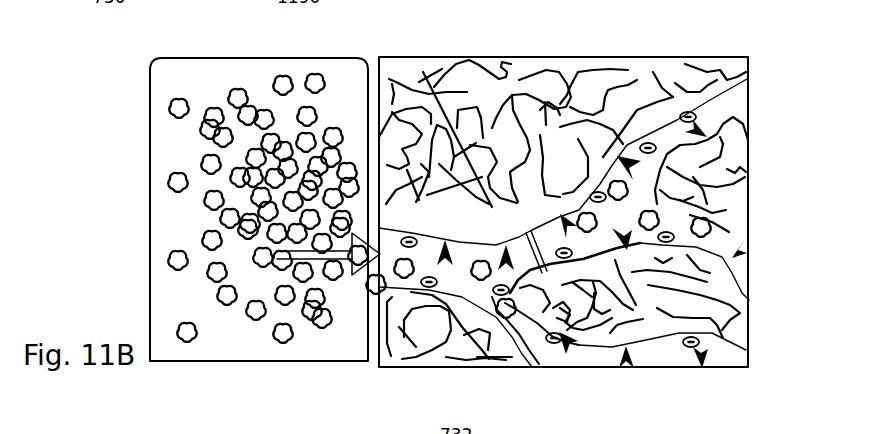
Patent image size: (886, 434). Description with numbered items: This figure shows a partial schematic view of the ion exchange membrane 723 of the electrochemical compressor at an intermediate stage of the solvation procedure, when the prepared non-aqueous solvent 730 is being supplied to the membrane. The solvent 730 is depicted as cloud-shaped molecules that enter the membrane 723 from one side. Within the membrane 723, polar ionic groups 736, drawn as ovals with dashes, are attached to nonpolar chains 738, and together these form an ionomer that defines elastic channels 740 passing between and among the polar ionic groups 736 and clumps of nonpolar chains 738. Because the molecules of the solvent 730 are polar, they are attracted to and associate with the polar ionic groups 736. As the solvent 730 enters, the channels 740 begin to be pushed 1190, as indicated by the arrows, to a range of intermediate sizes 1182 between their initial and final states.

The nonpolar chains 738 is at (469, 57).
The ion exchange membrane 723 is at (577, 57).
The elastic channels 740 is at (645, 186).
The non-aqueous solvent 730 is at (322, 325).
The pushing of the channels 1190 is at (735, 255).
The intermediate sizes 1182 is at (505, 297).
The polar ionic groups 736 is at (689, 347).